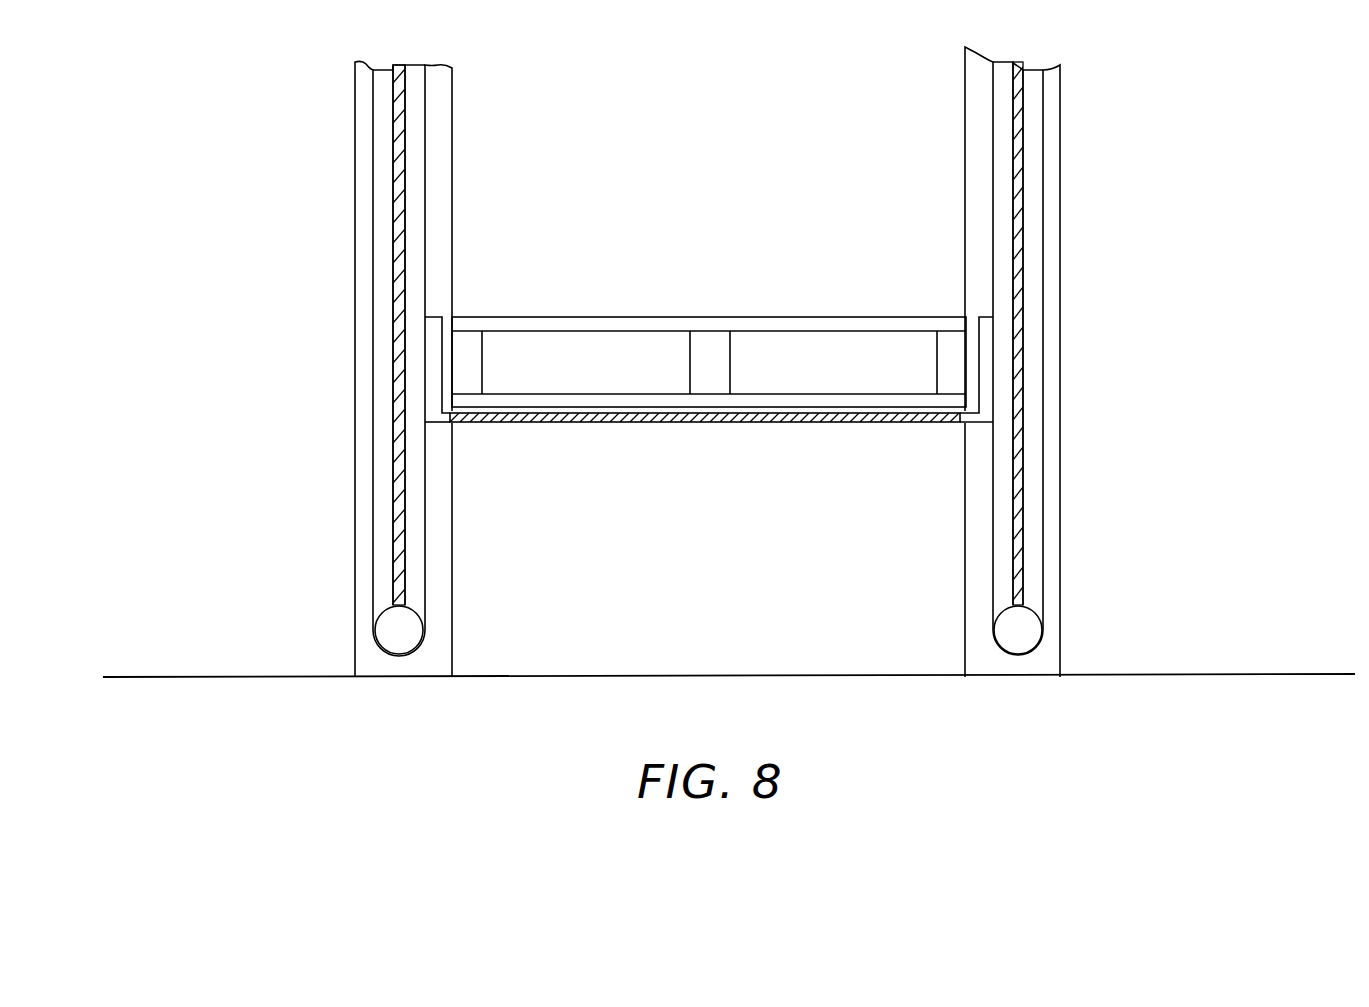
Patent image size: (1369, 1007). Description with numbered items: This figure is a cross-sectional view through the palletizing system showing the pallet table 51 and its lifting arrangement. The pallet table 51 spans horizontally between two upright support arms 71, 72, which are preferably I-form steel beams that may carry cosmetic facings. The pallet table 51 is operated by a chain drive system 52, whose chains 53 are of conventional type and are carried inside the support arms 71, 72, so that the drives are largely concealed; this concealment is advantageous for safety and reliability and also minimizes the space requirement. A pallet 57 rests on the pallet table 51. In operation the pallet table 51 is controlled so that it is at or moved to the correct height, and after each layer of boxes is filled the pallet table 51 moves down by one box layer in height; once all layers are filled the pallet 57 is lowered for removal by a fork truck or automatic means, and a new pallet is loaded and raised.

The pallet table 51 is at (693, 423).
The chain drive system 52 is at (463, 622).
The chains 53 is at (437, 571).
The pallet 57 is at (708, 318).
The support arm 71 is at (1060, 648).
The support arm 72 is at (355, 640).